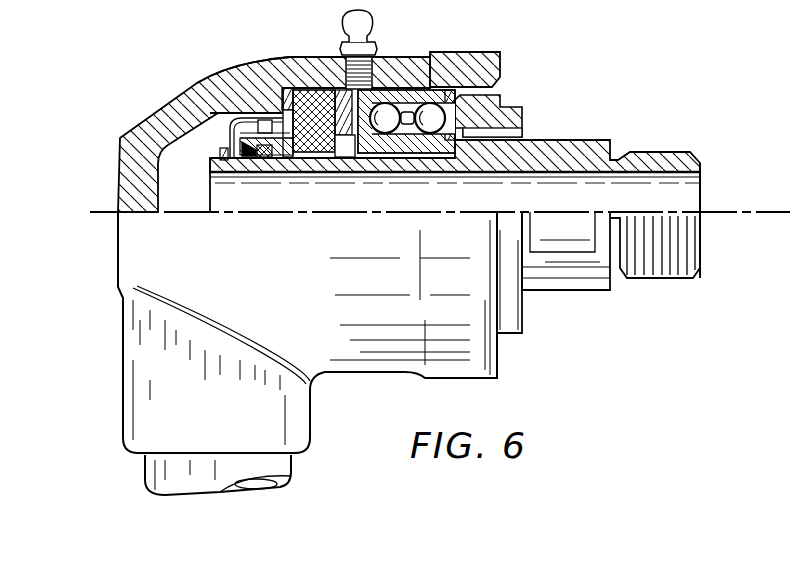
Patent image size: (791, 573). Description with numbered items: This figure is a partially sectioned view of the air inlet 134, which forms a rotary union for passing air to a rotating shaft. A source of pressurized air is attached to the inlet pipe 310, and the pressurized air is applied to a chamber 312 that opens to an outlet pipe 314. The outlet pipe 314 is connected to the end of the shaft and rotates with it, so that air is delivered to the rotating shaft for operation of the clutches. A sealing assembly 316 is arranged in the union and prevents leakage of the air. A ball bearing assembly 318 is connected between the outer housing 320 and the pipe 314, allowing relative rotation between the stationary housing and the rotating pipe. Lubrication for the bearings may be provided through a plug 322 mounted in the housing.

The air inlet 134 is at (546, 81).
The inlet pipe 310 is at (168, 476).
The chamber 312 is at (173, 167).
The outlet pipe 314 is at (553, 152).
The sealing assembly 316 is at (272, 112).
The ball bearing assembly 318 is at (403, 110).
The outer housing 320 is at (187, 108).
The plug 322 is at (367, 24).